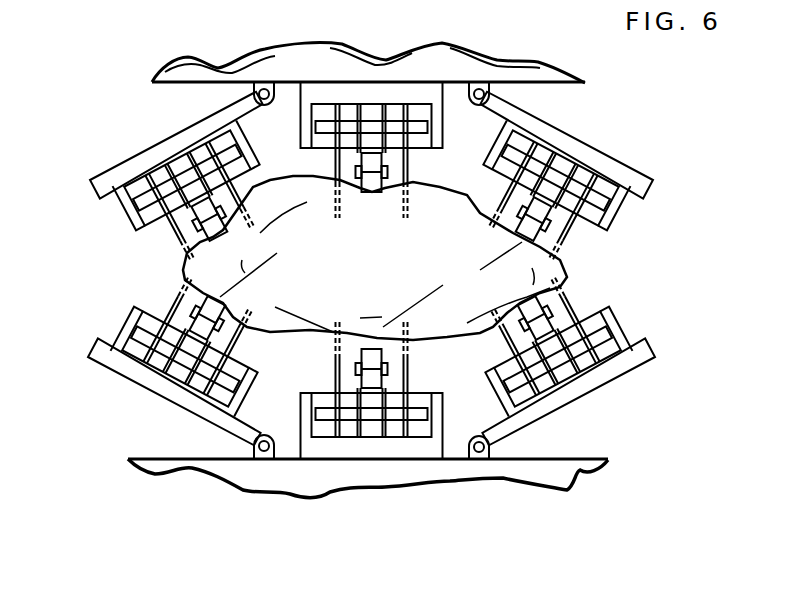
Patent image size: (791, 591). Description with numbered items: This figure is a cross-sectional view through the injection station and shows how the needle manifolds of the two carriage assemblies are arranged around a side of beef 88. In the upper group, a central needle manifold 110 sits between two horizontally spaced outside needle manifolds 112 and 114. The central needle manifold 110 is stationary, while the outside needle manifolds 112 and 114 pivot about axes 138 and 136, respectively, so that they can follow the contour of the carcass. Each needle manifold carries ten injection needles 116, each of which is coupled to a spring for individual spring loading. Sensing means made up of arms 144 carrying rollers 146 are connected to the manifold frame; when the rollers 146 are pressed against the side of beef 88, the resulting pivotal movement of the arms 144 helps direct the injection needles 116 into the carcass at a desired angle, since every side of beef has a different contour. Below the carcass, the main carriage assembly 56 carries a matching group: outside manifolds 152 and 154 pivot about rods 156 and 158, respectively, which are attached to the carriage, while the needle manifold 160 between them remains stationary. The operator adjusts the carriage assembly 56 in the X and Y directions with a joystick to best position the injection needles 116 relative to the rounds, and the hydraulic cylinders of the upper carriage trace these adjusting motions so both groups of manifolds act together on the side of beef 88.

The carriage assembly 56 is at (253, 472).
The side of beef 88 is at (370, 262).
The central needle manifold 110 is at (357, 95).
The needle manifold 112 is at (108, 177).
The needle manifold 114 is at (617, 183).
The injection needles 116 is at (252, 185).
The axis 136 is at (481, 85).
The axis 138 is at (266, 85).
The arms 144 is at (187, 240).
The rollers 146 is at (528, 293).
The manifold 152 is at (113, 362).
The manifold 154 is at (613, 370).
The rod 156 is at (263, 436).
The rod 158 is at (483, 456).
The needle manifold 160 is at (333, 450).